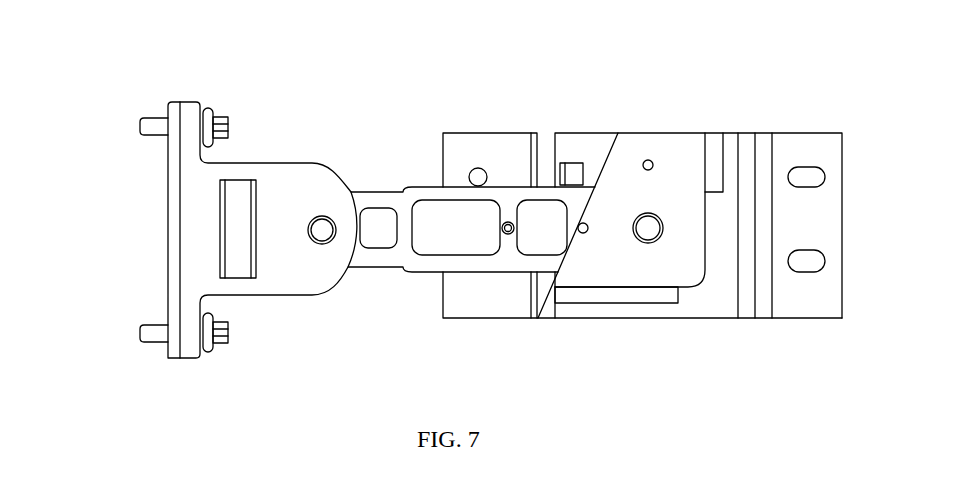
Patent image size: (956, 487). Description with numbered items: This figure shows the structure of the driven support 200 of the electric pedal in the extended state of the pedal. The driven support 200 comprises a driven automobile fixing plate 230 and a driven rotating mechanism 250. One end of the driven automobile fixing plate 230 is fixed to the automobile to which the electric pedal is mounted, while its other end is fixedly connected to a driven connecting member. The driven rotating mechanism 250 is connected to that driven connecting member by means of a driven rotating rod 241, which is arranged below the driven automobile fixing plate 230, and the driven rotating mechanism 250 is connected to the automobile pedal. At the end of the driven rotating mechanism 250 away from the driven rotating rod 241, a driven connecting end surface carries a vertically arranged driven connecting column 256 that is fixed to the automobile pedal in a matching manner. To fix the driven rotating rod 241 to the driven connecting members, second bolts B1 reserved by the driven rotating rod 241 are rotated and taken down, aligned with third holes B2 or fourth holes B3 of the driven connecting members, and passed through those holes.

The driven support 200 is at (612, 138).
The driven automobile fixing plate 230 is at (460, 145).
The driven rotating rod 241 is at (395, 202).
The driven rotating mechanism 250 is at (200, 243).
The driven connecting column 256 is at (155, 123).
The second bolts B1 is at (502, 242).
The third holes B2 is at (580, 238).
The fourth holes B3 is at (655, 157).